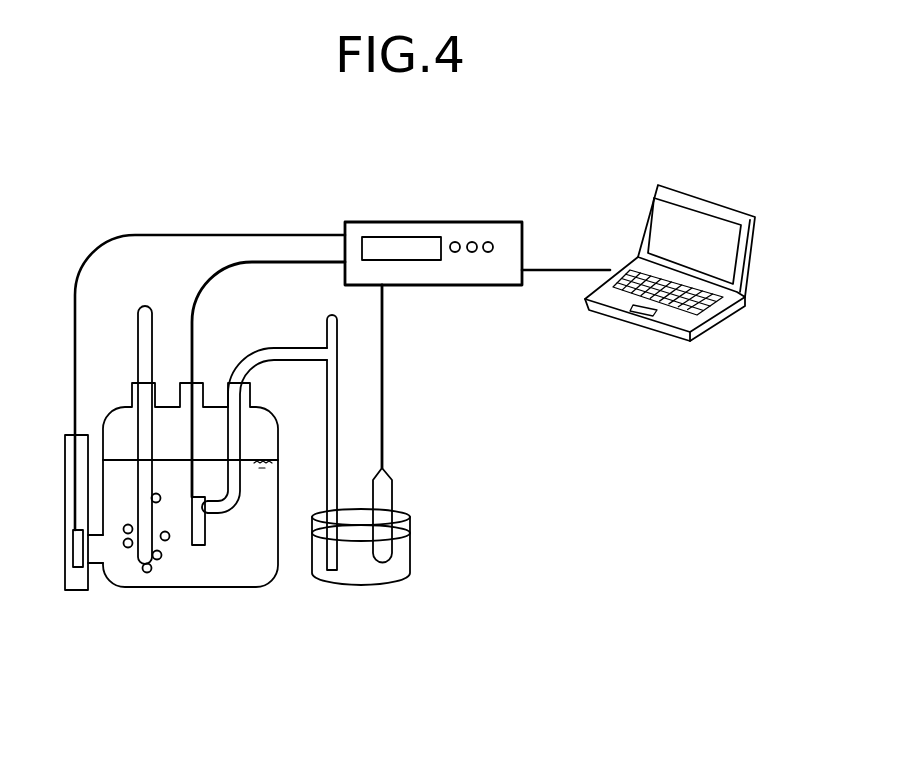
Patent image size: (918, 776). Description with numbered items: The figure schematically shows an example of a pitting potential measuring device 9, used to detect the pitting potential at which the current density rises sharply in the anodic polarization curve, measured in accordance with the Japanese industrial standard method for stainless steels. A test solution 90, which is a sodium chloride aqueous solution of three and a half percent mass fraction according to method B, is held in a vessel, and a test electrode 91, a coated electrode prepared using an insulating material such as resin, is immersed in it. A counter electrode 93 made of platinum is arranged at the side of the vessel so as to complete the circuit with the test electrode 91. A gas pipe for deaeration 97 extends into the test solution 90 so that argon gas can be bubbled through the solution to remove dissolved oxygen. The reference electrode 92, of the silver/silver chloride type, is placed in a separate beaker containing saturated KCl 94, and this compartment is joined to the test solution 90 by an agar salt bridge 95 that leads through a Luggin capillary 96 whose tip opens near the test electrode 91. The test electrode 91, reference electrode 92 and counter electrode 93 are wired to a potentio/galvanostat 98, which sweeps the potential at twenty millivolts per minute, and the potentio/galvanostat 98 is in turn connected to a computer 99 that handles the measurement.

The pitting potential measuring device 9 is at (193, 181).
The test solution 90 is at (176, 576).
The test electrode 91 is at (205, 539).
The reference electrode 92 is at (386, 548).
The counter electrode 93 is at (73, 558).
The saturated KCl 94 is at (357, 571).
The agar salt bridge 95 is at (338, 390).
The Luggin capillary 96 is at (255, 507).
The gas pipe for deaeration 97 is at (143, 554).
The potentio/galvanostat 98 is at (420, 221).
The computer 99 is at (636, 216).